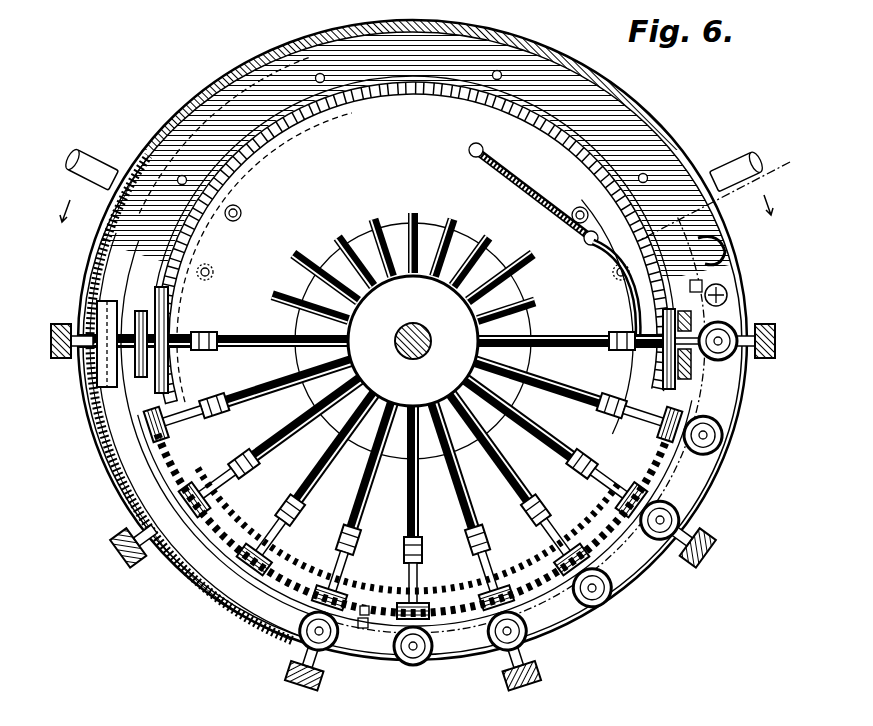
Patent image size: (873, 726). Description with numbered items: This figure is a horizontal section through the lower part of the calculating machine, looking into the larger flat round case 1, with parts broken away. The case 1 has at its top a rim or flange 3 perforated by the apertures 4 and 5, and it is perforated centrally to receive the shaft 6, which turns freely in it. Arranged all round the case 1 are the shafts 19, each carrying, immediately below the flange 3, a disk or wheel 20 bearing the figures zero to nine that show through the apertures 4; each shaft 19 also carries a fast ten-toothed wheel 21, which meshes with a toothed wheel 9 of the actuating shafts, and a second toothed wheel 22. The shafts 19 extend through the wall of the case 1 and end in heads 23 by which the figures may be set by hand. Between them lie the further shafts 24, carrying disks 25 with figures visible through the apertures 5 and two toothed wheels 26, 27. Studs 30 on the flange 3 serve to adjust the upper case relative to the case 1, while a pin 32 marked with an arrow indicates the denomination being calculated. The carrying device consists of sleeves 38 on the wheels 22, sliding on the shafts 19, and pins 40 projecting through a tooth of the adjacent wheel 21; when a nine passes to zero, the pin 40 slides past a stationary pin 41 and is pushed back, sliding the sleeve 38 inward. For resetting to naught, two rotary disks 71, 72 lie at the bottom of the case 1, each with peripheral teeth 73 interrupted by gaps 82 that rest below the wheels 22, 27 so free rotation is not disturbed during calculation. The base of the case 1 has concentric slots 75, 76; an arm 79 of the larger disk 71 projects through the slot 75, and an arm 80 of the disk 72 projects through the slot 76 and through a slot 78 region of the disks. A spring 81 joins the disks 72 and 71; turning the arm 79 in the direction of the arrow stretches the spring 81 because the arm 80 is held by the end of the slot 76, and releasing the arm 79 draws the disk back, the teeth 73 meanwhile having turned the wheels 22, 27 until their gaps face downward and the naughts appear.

The case 1 is at (268, 640).
The rim or flange 3 is at (575, 616).
The apertures 4 is at (343, 650).
The apertures 5 is at (445, 656).
The shaft 6 is at (432, 340).
The toothed wheel 9 is at (392, 366).
The shafts 19 is at (425, 540).
The disk or wheel 20 is at (180, 560).
The ten-toothed wheel 21 is at (525, 505).
The toothed wheel 22 is at (665, 465).
The heads 23 is at (722, 553).
The shafts 24 is at (412, 351).
The disks 25 is at (232, 598).
The toothed wheel 26 is at (480, 612).
The toothed wheel 27 is at (595, 460).
The studs 30 is at (370, 632).
The pin 32 is at (728, 296).
The sleeves 38 is at (575, 460).
The pins 40 is at (358, 628).
The stationary pins 41 is at (182, 184).
The rotary disk 71 is at (395, 82).
The rotary disk 72 is at (413, 243).
The teeth 73 is at (585, 115).
The slot 75 is at (572, 200).
The slot 76 is at (235, 262).
The slot 78 is at (625, 355).
The arm 79 is at (740, 160).
The arm 80 is at (95, 165).
The spring 81 is at (515, 178).
The gaps 82 is at (492, 100).